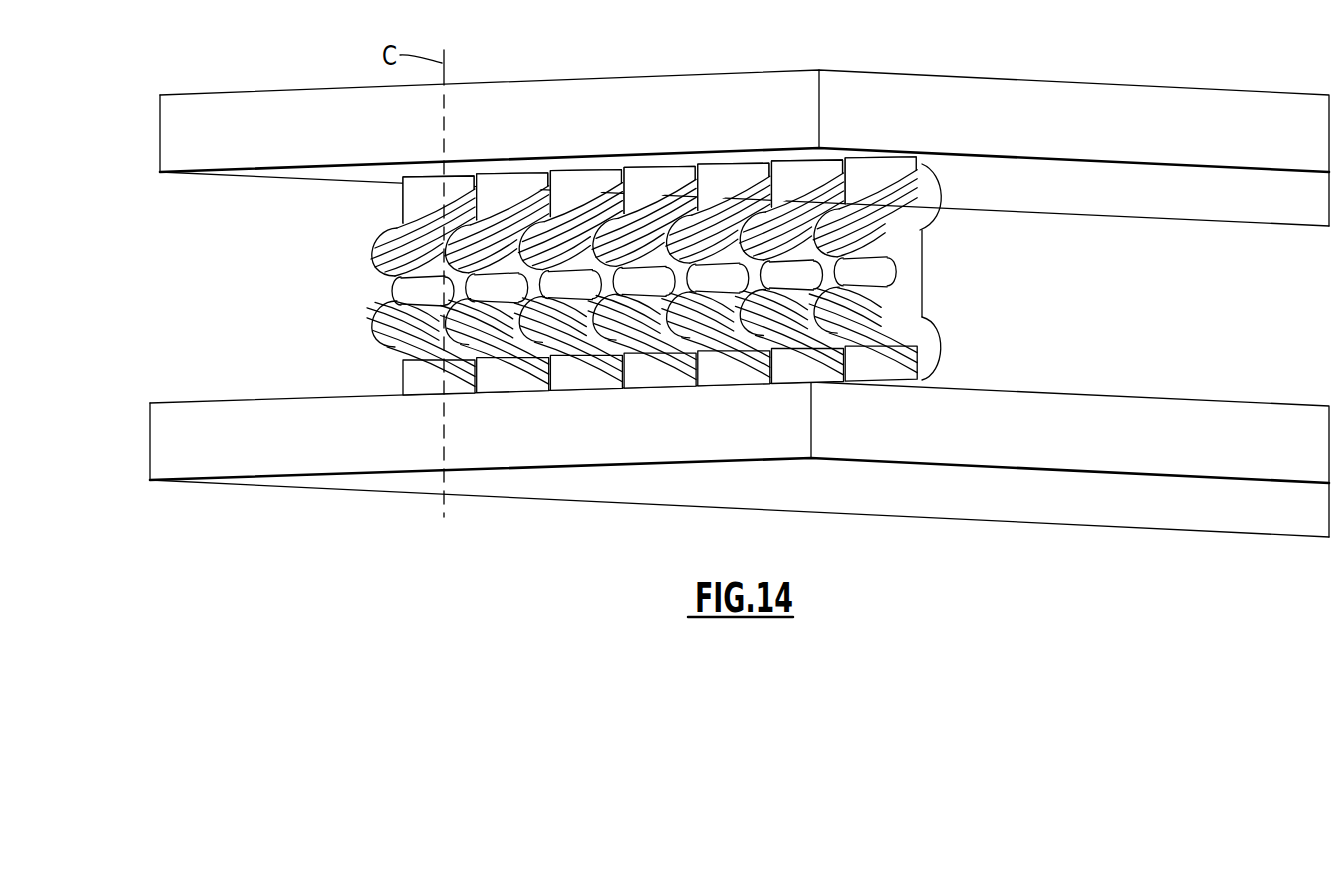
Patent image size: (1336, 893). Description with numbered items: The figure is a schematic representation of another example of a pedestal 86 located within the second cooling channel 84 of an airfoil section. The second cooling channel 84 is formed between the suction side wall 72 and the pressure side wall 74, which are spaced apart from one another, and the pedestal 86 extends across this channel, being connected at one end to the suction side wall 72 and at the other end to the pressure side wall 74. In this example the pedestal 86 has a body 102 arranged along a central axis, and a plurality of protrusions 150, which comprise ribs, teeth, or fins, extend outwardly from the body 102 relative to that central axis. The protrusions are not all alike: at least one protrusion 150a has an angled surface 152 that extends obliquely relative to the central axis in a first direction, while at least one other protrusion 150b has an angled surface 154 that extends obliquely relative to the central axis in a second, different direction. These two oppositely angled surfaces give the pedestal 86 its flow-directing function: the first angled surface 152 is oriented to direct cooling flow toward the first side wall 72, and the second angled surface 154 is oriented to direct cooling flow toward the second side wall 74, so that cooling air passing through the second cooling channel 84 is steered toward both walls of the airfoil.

The suction side wall 72 is at (1055, 82).
The pressure side wall 74 is at (962, 448).
The second cooling channel 84 is at (162, 237).
The pedestal 86 is at (807, 185).
The body 102 is at (403, 293).
The protrusions 150 is at (643, 276).
The protrusion 150a is at (600, 227).
The other protrusion 150b is at (601, 341).
The angled surface 152 is at (387, 233).
The angled surface 154 is at (382, 343).